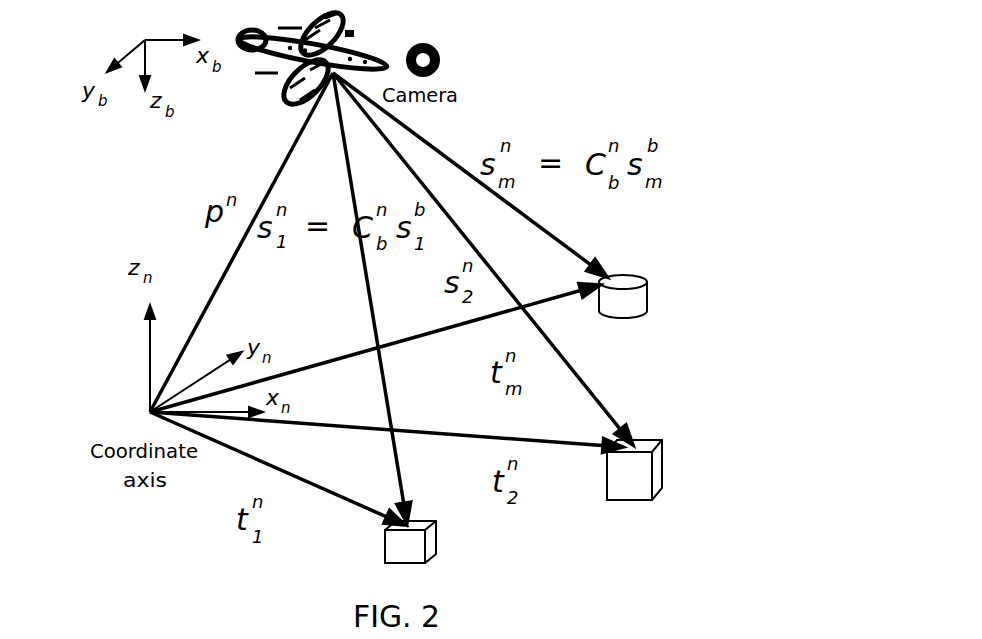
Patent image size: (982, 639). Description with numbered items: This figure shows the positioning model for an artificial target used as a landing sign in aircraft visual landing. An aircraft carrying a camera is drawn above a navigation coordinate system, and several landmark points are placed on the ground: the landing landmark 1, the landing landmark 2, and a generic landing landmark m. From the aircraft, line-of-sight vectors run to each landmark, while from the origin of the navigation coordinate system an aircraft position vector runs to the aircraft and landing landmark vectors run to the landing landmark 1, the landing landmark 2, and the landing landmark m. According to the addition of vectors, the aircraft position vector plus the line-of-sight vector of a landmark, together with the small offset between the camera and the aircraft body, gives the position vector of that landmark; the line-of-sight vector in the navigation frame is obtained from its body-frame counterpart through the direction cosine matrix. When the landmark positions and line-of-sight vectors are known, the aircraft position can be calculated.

The landing landmark 1 is at (353, 549).
The landing landmark 2 is at (641, 499).
The landing landmark m is at (630, 325).